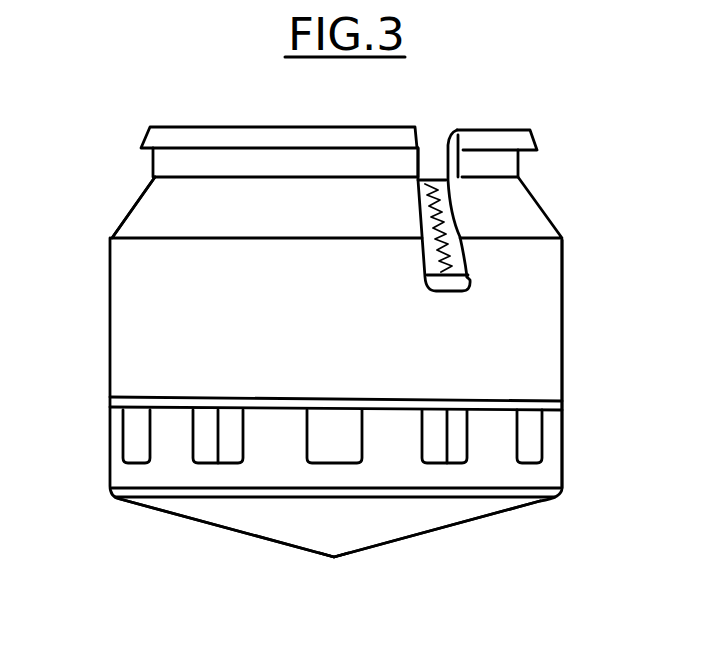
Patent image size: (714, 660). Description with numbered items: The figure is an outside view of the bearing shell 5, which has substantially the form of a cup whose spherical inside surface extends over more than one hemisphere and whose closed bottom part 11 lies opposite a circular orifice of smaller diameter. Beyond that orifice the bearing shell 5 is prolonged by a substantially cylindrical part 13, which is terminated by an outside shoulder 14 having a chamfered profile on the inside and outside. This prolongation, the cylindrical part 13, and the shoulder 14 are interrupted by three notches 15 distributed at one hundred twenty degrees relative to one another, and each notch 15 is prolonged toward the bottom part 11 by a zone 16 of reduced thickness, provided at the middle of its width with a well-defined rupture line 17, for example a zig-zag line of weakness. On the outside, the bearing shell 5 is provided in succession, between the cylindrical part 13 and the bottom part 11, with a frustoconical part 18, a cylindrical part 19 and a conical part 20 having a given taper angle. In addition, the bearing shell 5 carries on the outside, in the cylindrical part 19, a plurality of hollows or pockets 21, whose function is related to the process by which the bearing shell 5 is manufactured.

The bearing shell 5 is at (562, 365).
The closed bottom part 11 is at (313, 553).
The cylindrical part 13 is at (517, 163).
The outside shoulder 14 is at (527, 143).
The notches 15 is at (430, 158).
The zone of reduced thickness 16 is at (452, 220).
The rupture line 17 is at (450, 243).
The frustoconical part 18 is at (128, 216).
The cylindrical part 19 is at (563, 317).
The conical part 20 is at (510, 513).
The pockets 21 is at (455, 450).